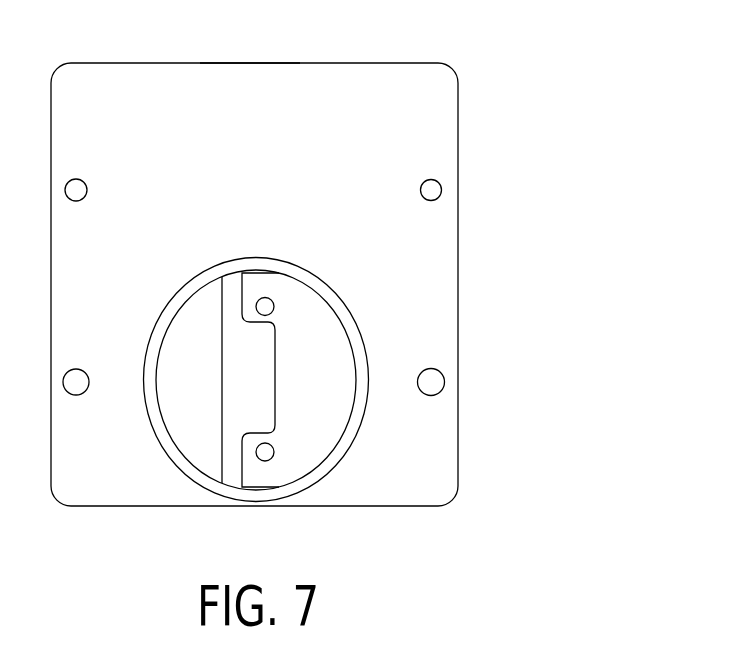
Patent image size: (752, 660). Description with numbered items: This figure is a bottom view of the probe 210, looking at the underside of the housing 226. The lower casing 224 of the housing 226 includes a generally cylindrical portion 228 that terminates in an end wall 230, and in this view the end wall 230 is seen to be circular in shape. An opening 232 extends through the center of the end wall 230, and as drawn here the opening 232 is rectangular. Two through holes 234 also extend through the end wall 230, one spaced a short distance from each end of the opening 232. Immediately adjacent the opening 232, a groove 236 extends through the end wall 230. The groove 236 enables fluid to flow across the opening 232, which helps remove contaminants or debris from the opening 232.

The probe 210 is at (540, 95).
The lower casing 224 is at (350, 98).
The housing 226 is at (201, 46).
The generally cylindrical portion 228 is at (313, 290).
The end wall 230 is at (315, 331).
The opening 232 is at (270, 372).
The through holes 234 is at (263, 299).
The groove 236 is at (232, 280).